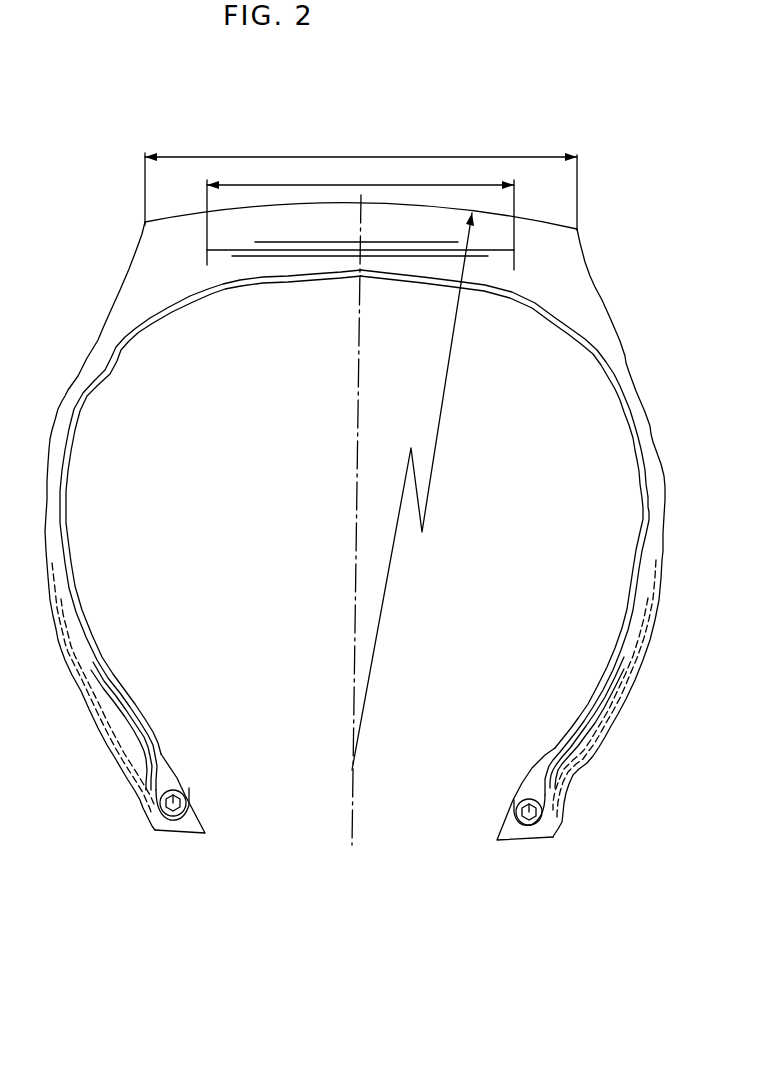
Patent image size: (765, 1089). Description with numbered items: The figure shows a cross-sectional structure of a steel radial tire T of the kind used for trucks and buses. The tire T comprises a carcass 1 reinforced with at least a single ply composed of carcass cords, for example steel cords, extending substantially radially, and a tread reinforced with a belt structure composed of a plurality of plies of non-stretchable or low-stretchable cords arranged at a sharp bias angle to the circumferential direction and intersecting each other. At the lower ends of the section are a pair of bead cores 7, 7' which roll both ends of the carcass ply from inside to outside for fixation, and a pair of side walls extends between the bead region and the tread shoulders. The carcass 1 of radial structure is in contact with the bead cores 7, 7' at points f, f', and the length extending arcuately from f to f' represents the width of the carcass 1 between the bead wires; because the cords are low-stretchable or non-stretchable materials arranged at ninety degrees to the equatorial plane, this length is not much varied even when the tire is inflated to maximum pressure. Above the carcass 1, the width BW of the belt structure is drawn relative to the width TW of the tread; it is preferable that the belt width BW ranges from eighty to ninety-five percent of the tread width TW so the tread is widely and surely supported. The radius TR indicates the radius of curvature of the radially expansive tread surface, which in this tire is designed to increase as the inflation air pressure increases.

The tire T is at (100, 287).
The carcass 1 is at (82, 413).
The bead core 7 is at (180, 824).
The bead core 7' is at (526, 826).
The contact point f is at (194, 781).
The contact point f' is at (506, 790).
The tread width TW is at (361, 182).
The belt width BW is at (360, 216).
The tread radius of curvature TR is at (413, 491).